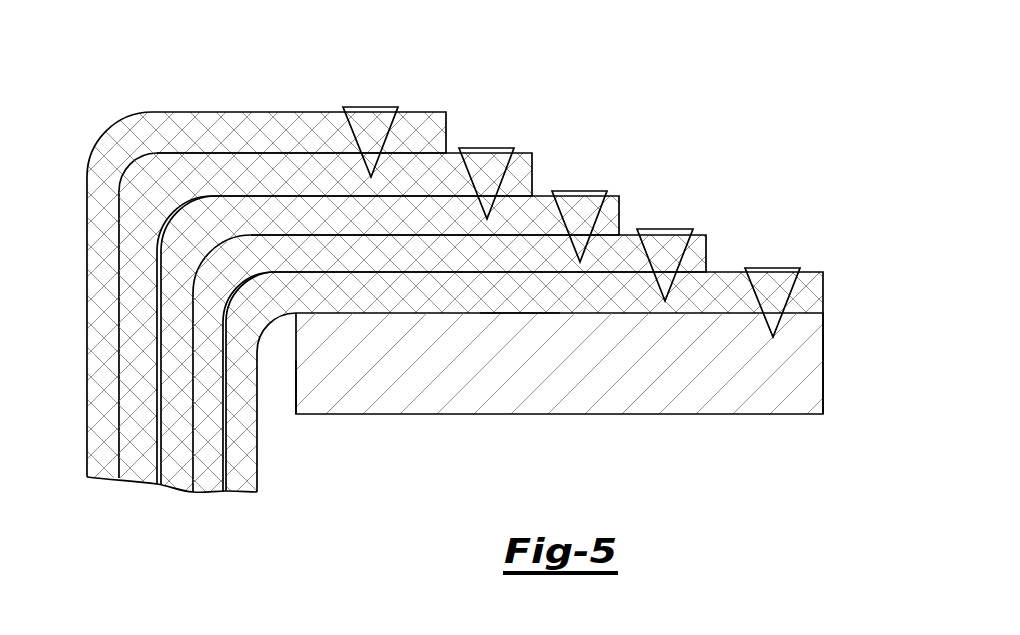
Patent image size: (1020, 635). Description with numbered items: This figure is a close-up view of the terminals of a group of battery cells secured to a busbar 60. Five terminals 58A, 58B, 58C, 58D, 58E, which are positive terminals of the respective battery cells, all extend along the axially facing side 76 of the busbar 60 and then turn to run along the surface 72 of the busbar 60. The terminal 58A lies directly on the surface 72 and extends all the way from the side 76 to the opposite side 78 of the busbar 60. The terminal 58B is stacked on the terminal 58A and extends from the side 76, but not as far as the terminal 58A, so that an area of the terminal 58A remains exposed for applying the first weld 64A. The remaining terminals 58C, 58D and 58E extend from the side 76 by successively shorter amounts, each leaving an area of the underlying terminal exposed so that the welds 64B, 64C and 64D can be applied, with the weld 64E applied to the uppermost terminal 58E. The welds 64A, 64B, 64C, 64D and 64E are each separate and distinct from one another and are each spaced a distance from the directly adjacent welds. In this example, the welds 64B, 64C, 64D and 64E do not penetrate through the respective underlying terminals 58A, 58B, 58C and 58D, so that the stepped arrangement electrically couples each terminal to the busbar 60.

The terminal 58A is at (240, 453).
The terminal 58B is at (207, 470).
The terminal 58C is at (175, 462).
The terminal 58D is at (142, 405).
The terminal 58E is at (110, 344).
The first weld 64A is at (773, 266).
The weld 64B is at (665, 227).
The weld 64C is at (580, 189).
The weld 64D is at (487, 146).
The weld 64E is at (371, 105).
The busbar 60 is at (691, 375).
The surface 72 is at (520, 313).
The axially facing side 76 is at (290, 393).
The side 78 is at (823, 359).